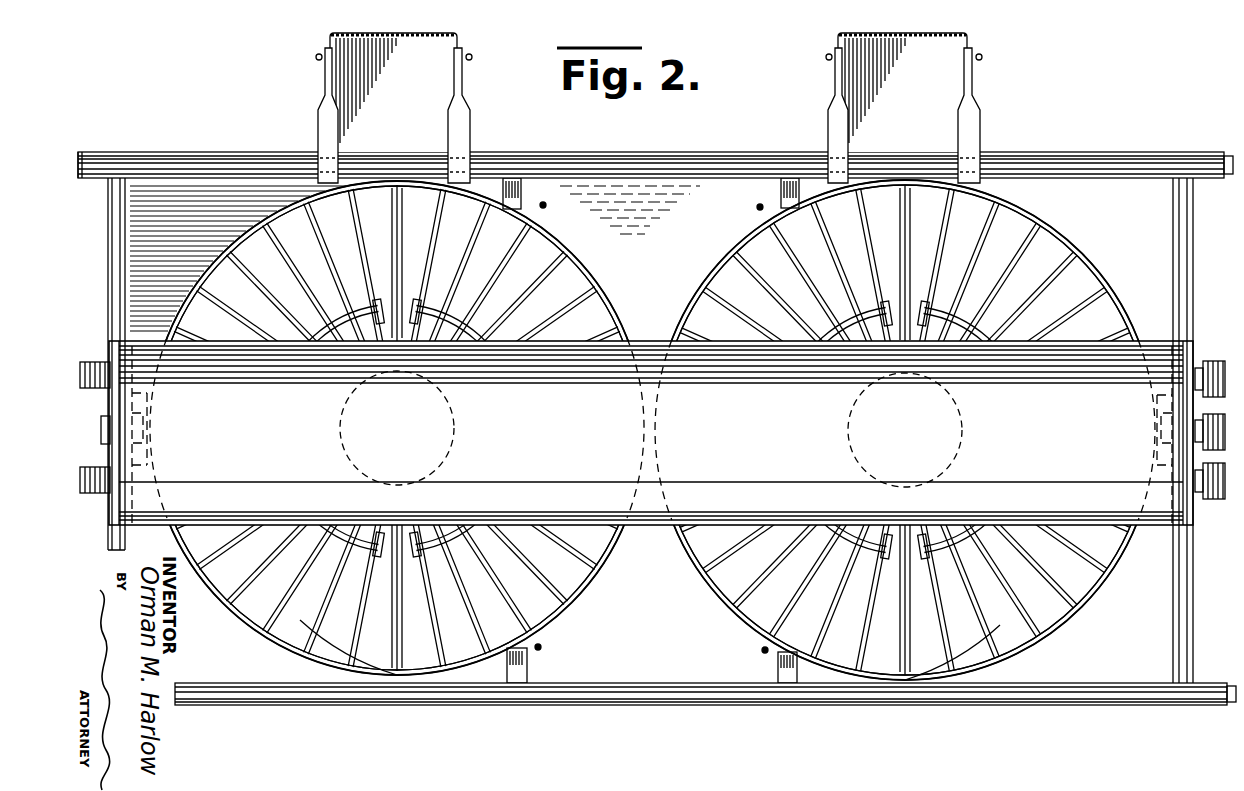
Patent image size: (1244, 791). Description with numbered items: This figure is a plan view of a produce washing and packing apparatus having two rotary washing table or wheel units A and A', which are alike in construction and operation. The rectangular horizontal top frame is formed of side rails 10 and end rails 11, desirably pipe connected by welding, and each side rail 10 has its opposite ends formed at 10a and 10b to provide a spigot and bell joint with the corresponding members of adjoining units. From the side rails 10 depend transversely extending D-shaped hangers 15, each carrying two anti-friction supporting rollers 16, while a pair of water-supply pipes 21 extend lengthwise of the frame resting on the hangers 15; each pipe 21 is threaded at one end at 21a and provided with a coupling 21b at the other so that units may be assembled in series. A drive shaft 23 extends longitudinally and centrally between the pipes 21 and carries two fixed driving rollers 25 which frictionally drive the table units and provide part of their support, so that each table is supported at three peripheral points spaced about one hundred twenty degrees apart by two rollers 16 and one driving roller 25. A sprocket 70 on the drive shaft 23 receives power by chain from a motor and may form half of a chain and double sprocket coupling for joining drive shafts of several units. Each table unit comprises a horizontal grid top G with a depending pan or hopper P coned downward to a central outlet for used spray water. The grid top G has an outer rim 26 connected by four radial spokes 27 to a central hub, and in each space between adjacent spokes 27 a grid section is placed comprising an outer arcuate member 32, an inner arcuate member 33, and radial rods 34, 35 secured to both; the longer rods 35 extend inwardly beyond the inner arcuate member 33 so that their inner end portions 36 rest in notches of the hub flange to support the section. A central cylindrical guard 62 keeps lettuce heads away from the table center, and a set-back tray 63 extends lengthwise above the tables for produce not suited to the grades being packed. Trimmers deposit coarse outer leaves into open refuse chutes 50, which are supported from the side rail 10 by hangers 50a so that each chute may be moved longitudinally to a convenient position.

The side rails 10 is at (646, 158).
The spigot end of side rail 10a is at (1222, 156).
The bell end of side rail 10b is at (82, 156).
The end rails 11 is at (110, 242).
The D-shaped hangers 15 is at (524, 200).
The anti-friction supporting rollers 16 is at (545, 215).
The water-supply pipes 21 is at (1205, 365).
The threaded end of water-supply pipe 21a is at (92, 390).
The coupling 21b is at (1222, 503).
The drive shaft 23 is at (650, 395).
The driving rollers 25 is at (148, 455).
The outer rim 26 is at (600, 298).
The radial bars or spokes 27 is at (398, 242).
The outer arcuate member 32 is at (560, 236).
The inner arcuate member 33 is at (472, 330).
The radial rods 34 is at (312, 278).
The radial rods 35 is at (462, 278).
The inner end portions of radial rods 36 is at (440, 526).
The refuse chutes 50 is at (352, 73).
The hangers for refuse chutes 50a is at (468, 136).
The cylindrical guard 62 is at (450, 425).
The set-back tray 63 is at (645, 372).
The sprocket 70 is at (1215, 448).
The grid top G is at (216, 239).
The rotary washing table unit A is at (397, 428).
The rotary washing table unit A' is at (905, 430).
The pan or hopper P is at (278, 663).